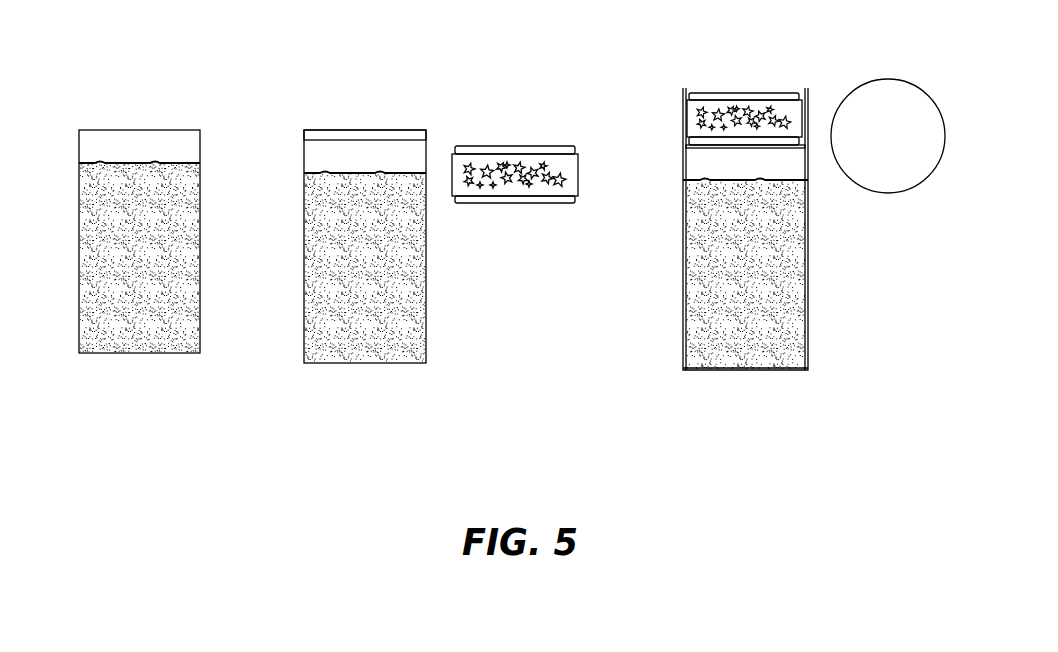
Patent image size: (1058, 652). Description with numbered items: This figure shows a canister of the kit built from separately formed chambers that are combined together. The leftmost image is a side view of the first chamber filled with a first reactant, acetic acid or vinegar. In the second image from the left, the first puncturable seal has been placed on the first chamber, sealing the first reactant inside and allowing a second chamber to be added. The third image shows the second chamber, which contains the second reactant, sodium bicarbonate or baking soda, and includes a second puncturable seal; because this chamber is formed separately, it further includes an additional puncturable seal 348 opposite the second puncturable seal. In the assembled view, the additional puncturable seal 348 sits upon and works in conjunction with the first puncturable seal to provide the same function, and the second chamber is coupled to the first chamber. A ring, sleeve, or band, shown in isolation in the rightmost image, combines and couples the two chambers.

The additional puncturable seal 348 is at (478, 198).